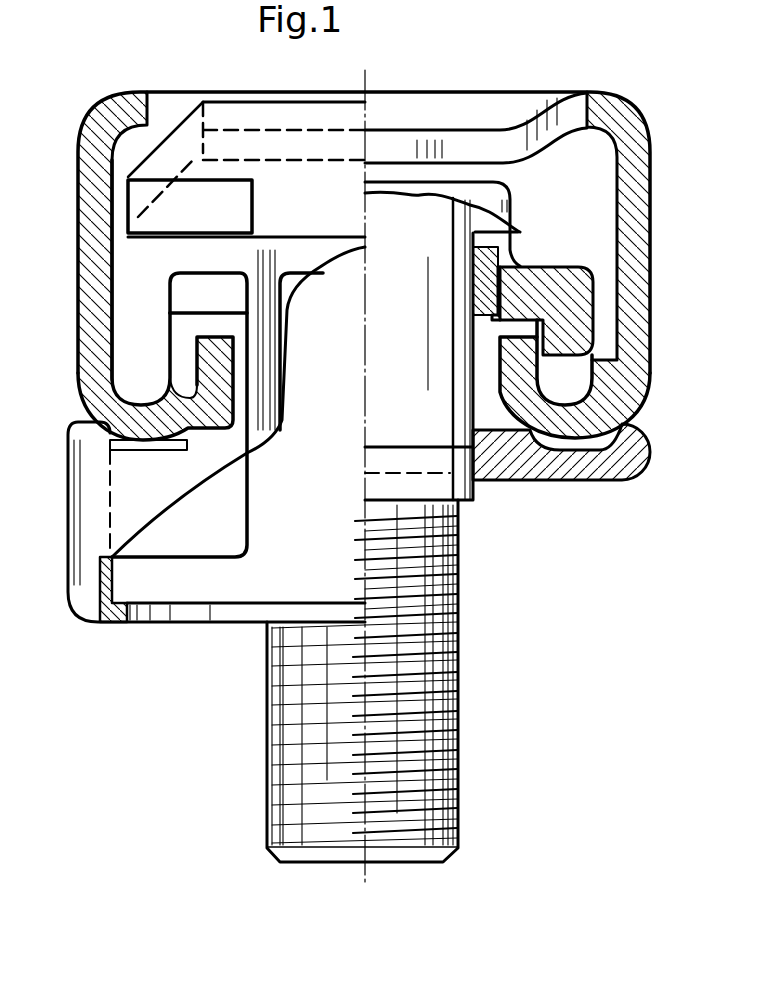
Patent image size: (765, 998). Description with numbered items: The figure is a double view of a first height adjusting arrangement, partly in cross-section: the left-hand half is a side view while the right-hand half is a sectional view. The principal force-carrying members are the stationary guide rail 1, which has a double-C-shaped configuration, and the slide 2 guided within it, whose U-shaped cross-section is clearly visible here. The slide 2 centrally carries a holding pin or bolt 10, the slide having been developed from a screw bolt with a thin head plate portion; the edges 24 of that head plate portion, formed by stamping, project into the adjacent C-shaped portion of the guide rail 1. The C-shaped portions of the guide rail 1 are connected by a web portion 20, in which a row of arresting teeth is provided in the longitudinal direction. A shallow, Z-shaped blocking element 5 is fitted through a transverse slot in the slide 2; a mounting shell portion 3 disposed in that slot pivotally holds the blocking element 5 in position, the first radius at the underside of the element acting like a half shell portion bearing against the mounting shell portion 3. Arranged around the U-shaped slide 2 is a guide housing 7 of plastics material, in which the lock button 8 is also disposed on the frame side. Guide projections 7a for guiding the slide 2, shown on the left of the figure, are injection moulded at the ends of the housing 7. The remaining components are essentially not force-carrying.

The guide rail 1 is at (637, 180).
The slide 2 is at (580, 287).
The mounting shell portion 3 is at (490, 260).
The blocking element 5 is at (143, 193).
The guide housing 7 is at (143, 277).
The guide projections 7a is at (148, 393).
The lock button 8 is at (185, 612).
The holding pin or bolt 10 is at (438, 737).
The web portion 20 is at (458, 142).
The edges 24 is at (600, 357).